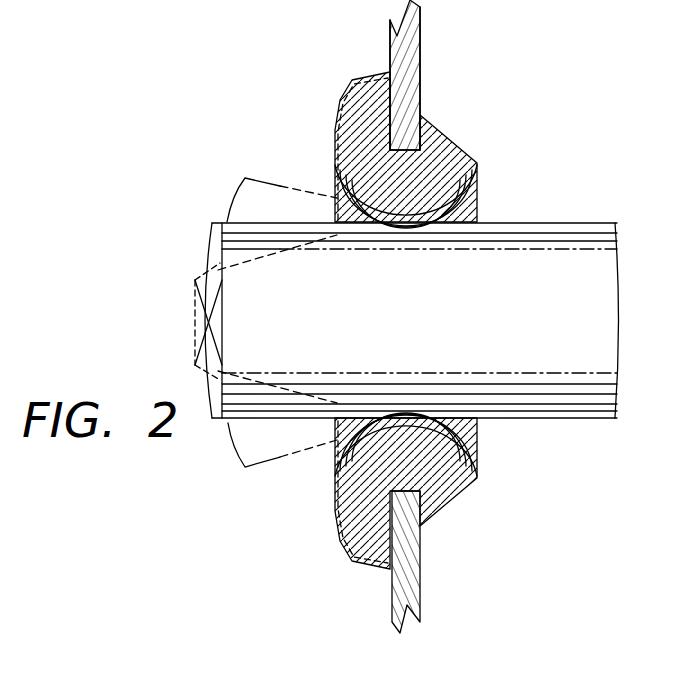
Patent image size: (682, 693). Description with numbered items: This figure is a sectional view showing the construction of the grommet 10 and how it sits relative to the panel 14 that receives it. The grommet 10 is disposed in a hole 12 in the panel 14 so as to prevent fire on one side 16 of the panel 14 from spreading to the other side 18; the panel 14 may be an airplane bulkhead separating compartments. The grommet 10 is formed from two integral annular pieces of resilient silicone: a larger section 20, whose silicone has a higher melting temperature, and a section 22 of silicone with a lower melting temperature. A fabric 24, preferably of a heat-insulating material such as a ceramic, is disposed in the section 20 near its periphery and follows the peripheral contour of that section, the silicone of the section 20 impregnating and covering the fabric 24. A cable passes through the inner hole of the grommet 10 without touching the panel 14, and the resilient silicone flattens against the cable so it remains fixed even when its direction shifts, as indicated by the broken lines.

The grommet 10 is at (503, 114).
The hole 12 is at (415, 478).
The panel 14 is at (408, 77).
The side 16 is at (390, 43).
The side 18 is at (422, 55).
The section 20 is at (362, 165).
The section 22 is at (462, 165).
The fabric 24 is at (333, 145).